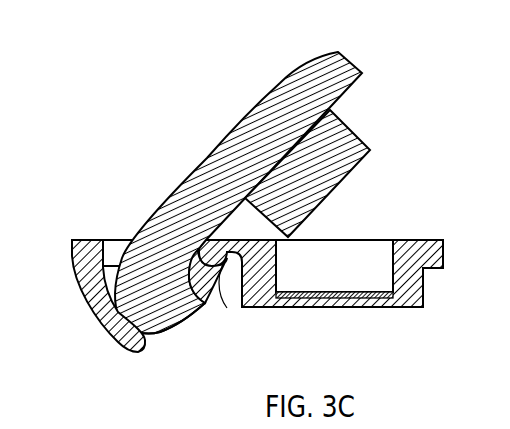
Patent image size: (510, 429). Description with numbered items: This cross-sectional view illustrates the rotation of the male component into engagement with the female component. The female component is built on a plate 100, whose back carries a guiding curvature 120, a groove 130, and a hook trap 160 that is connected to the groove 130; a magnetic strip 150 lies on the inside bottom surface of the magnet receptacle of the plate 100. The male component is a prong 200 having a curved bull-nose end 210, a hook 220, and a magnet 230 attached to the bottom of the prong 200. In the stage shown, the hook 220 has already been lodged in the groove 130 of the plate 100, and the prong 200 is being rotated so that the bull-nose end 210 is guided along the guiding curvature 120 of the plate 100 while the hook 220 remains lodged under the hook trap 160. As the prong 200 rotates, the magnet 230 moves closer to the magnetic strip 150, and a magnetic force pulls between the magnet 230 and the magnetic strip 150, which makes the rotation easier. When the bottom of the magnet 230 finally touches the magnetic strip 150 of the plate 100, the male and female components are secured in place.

The plate 100 is at (420, 240).
The guiding curvature 120 is at (96, 327).
The groove 130 is at (247, 244).
The magnetic strip 150 is at (327, 291).
The hook trap 160 is at (227, 260).
The prong 200 is at (351, 62).
The bull-nose end 210 is at (152, 334).
The hook 220 is at (227, 308).
The magnet 230 is at (346, 151).